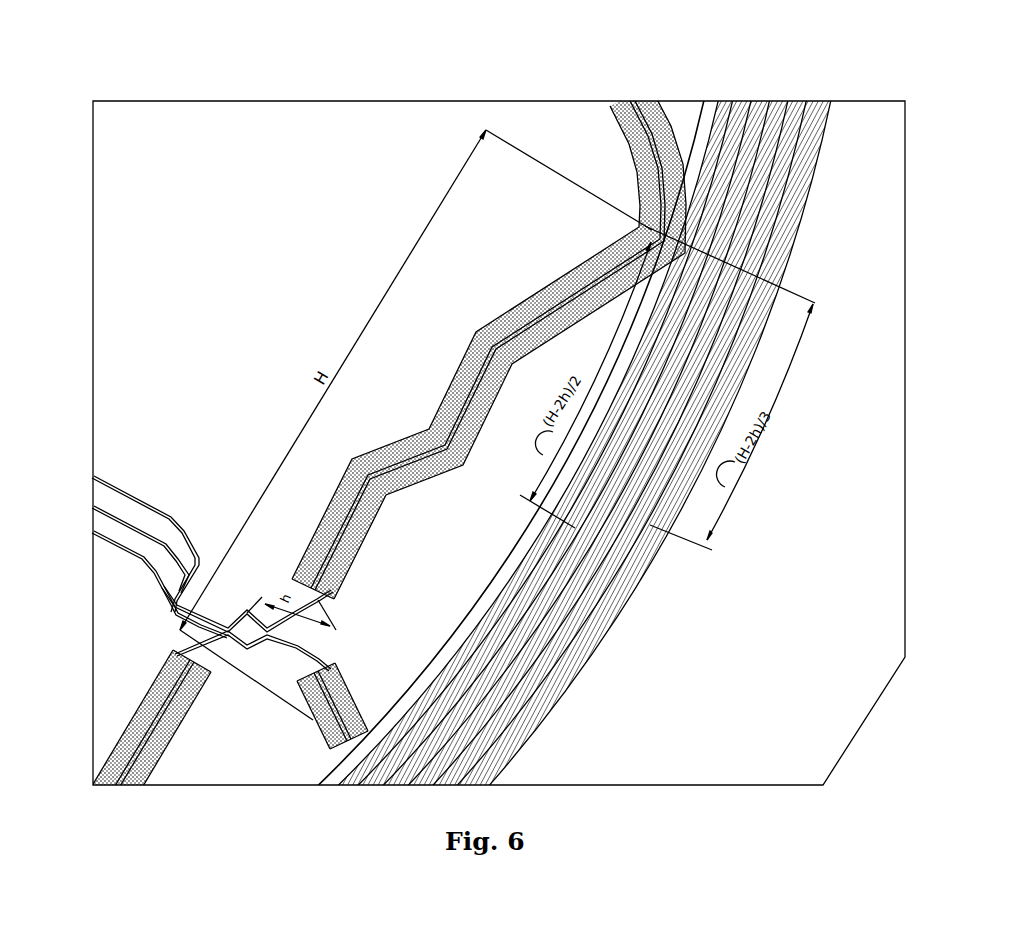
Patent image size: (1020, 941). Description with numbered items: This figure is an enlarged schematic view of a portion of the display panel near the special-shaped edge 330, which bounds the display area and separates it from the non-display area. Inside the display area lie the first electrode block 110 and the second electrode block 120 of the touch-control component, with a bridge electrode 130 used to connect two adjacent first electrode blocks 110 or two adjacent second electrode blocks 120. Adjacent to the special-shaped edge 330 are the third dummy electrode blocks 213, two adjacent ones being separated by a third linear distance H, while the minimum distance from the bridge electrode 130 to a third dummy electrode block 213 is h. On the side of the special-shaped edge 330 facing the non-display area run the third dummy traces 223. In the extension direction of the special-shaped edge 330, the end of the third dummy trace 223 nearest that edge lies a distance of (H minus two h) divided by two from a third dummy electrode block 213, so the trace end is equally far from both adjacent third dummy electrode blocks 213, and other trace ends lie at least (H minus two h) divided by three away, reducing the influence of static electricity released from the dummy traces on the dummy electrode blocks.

The second electrode block 120 is at (298, 117).
The first electrode block 110 is at (453, 483).
The bridge electrode 130 is at (225, 629).
The special-shaped edge 330 is at (499, 571).
The third dummy electrode block 213 is at (358, 696).
The third dummy trace 223 is at (610, 626).